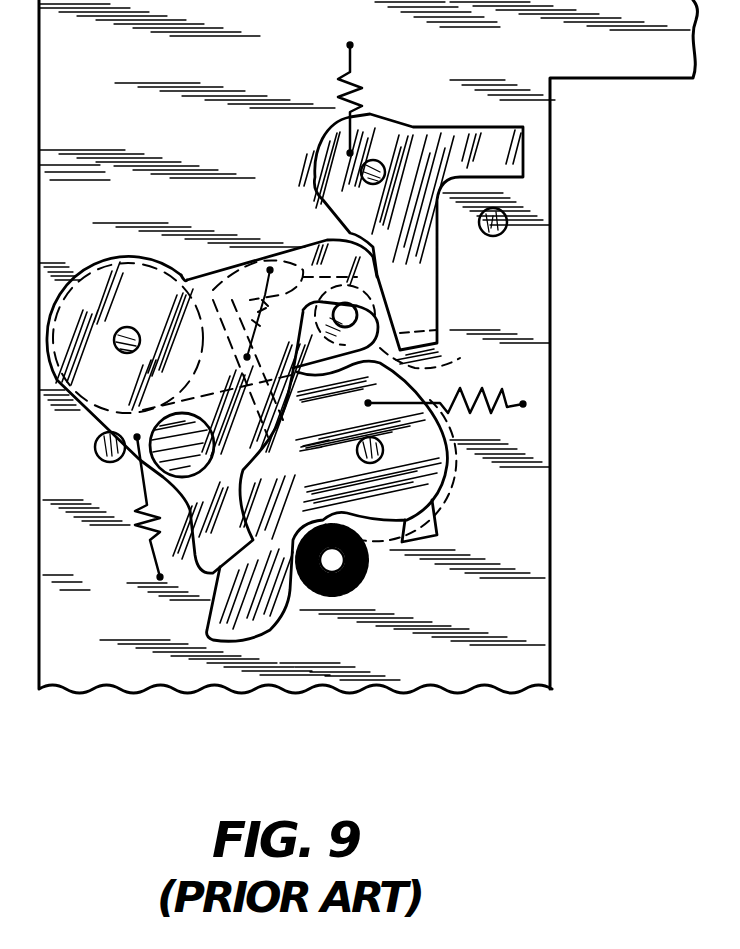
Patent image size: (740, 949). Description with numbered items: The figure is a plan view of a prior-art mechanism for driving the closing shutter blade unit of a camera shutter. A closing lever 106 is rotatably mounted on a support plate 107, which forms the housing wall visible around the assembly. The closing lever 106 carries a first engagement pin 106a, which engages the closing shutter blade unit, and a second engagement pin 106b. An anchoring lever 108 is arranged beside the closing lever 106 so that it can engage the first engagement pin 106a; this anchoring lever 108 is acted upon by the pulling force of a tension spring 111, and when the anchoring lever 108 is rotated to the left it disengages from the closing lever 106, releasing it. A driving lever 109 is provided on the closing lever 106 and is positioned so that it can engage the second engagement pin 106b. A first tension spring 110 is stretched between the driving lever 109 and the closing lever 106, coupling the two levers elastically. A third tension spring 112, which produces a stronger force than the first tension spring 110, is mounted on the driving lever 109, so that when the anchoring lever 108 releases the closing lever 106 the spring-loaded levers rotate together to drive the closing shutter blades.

The closing lever 106 is at (370, 330).
The first engagement pin 106a is at (470, 358).
The second engagement pin 106b is at (383, 317).
The support plate 107 is at (540, 620).
The anchoring lever 108 is at (447, 480).
The driving lever 109 is at (343, 246).
The first tension spring 110 is at (178, 348).
The first tension spring 111 is at (507, 408).
The third tension spring 112 is at (137, 540).